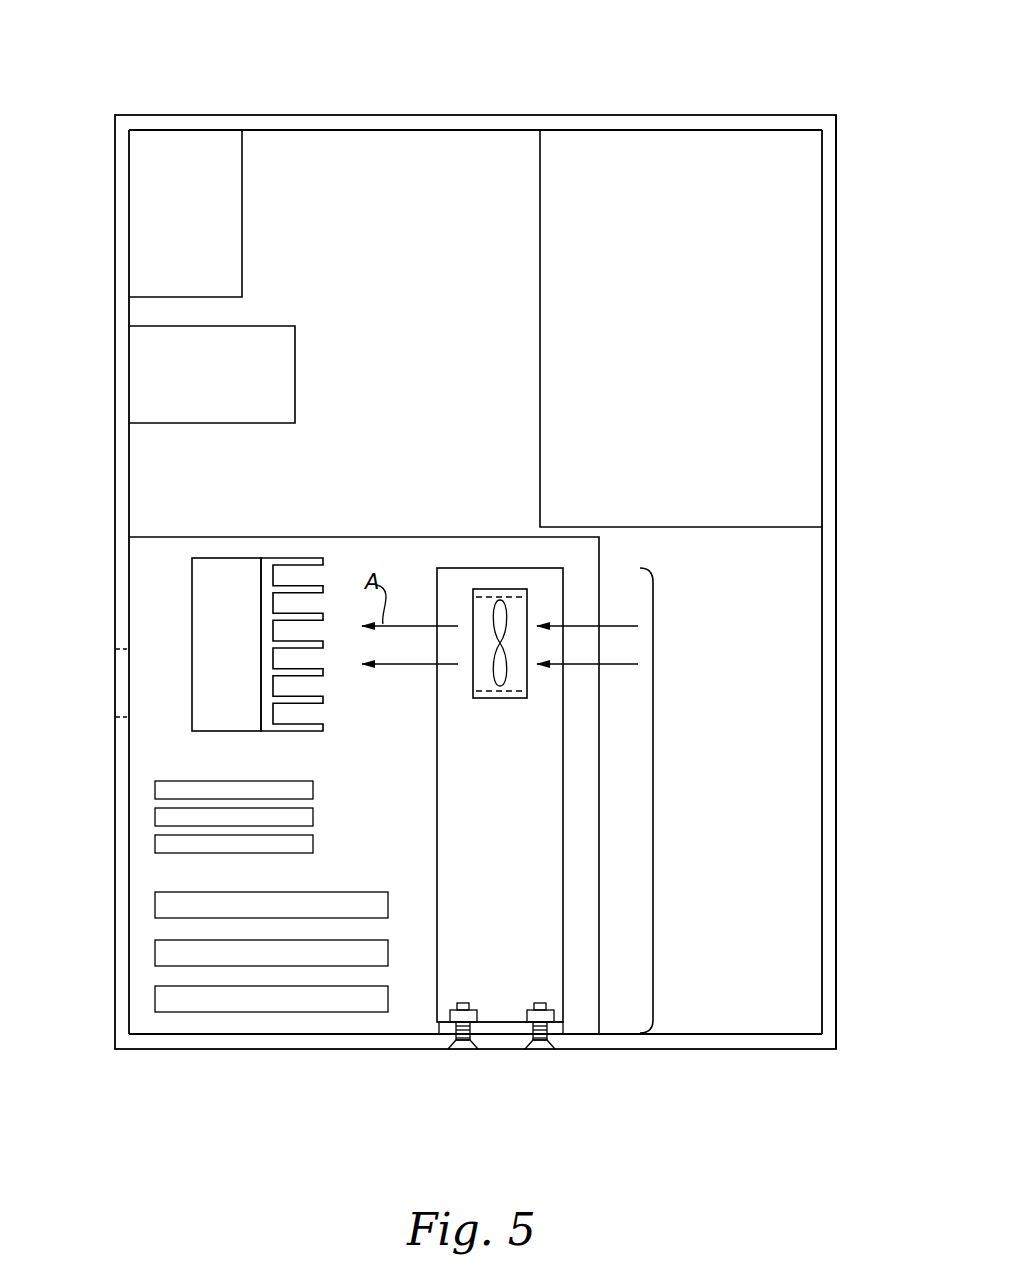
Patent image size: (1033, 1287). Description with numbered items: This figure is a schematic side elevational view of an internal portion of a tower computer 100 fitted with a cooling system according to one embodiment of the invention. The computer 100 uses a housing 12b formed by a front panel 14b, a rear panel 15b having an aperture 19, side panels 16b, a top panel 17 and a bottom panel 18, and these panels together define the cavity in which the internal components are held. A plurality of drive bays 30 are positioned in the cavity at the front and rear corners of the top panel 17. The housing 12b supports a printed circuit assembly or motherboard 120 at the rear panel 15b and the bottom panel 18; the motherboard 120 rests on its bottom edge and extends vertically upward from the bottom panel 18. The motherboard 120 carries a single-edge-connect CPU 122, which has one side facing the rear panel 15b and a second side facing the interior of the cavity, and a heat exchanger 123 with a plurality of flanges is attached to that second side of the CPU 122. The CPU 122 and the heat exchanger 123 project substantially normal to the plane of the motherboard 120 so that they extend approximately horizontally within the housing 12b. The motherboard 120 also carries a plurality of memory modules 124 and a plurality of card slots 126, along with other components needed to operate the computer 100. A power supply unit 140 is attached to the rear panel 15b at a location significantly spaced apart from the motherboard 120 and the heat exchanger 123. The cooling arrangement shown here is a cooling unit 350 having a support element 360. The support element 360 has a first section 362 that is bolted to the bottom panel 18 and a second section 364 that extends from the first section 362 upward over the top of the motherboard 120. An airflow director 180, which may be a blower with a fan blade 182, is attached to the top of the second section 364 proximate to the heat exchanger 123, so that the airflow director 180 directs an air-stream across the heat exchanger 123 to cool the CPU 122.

The tower computer 100 is at (730, 80).
The housing 12b is at (836, 115).
The front panel 14b is at (828, 944).
The rear panel 15b is at (122, 865).
The side panels 16b is at (757, 690).
The top panel 17 is at (493, 123).
The bottom panel 18 is at (723, 1039).
The aperture 19 is at (118, 652).
The drive bays 30 is at (232, 226).
The power supply unit 140 is at (285, 346).
The motherboard 120 is at (588, 558).
The single-edge-connect CPU 122 is at (219, 575).
The heat exchanger 123 is at (267, 562).
The memory modules 124 is at (307, 843).
The card slots 126 is at (378, 905).
The airflow director 180 is at (494, 699).
The fan blade 182 is at (500, 600).
The cooling unit 350 is at (653, 820).
The support element 360 is at (568, 856).
The first section 362 is at (558, 1028).
The second section 364 is at (438, 850).